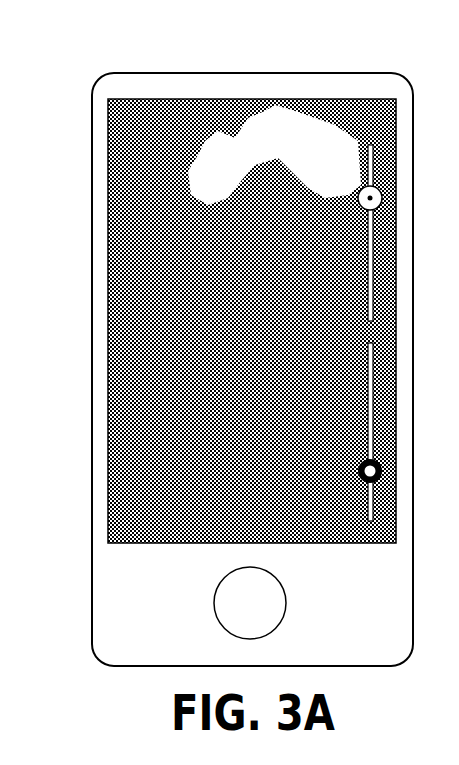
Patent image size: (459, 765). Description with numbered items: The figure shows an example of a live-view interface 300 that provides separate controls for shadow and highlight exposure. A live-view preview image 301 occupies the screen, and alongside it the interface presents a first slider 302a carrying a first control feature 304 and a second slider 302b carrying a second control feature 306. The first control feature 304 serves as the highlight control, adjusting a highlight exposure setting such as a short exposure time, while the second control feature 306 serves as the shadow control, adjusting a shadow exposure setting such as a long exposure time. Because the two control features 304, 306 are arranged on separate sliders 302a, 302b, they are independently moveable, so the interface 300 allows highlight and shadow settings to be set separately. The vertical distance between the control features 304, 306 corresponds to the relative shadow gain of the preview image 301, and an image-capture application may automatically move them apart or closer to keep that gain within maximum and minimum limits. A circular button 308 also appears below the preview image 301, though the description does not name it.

The live-view interface 300 is at (75, 633).
The live-view preview image 301 is at (257, 102).
The first slider 302a is at (362, 138).
The second slider 302b is at (362, 333).
The first control feature 304 is at (373, 184).
The second control feature 306 is at (372, 452).
The capture button 308 is at (230, 609).